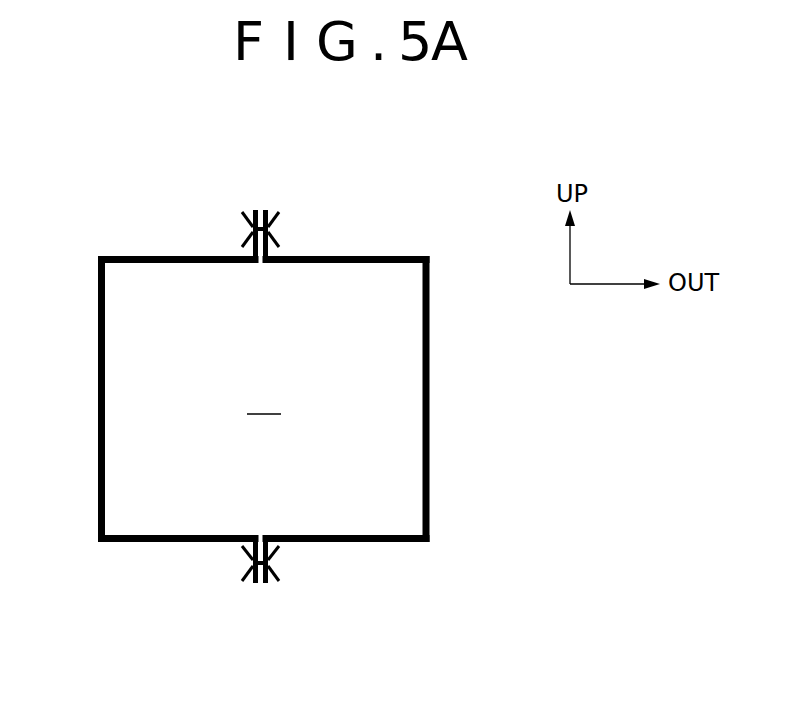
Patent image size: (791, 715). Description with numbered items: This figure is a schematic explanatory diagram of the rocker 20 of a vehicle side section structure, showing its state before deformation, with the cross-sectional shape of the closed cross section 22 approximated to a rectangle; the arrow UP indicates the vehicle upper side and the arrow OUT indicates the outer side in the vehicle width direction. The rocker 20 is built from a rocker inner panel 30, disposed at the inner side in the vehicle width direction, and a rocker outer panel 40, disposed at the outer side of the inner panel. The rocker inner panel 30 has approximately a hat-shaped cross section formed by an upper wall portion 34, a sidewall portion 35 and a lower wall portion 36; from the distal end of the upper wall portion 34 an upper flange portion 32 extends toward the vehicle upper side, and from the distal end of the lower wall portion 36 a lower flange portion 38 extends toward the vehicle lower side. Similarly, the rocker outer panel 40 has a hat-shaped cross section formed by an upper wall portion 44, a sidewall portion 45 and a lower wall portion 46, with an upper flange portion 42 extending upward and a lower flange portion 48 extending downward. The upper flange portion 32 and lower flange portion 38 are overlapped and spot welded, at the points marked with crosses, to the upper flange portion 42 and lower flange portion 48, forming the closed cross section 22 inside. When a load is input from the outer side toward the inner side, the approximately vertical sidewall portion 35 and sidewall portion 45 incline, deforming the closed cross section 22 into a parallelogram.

The rocker 20 is at (270, 390).
The closed cross section 22 is at (264, 400).
The rocker inner panel 30 is at (270, 404).
The upper flange portion 32 is at (253, 210).
The upper wall portion 34 is at (168, 257).
The sidewall portion 35 is at (98, 358).
The lower wall portion 36 is at (165, 543).
The lower flange portion 38 is at (247, 583).
The rocker outer panel 40 is at (476, 397).
The upper flange portion 42 is at (278, 210).
The upper wall portion 44 is at (345, 256).
The sidewall portion 45 is at (430, 383).
The lower wall portion 46 is at (375, 543).
The lower flange portion 48 is at (272, 583).